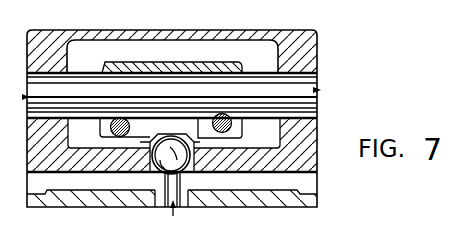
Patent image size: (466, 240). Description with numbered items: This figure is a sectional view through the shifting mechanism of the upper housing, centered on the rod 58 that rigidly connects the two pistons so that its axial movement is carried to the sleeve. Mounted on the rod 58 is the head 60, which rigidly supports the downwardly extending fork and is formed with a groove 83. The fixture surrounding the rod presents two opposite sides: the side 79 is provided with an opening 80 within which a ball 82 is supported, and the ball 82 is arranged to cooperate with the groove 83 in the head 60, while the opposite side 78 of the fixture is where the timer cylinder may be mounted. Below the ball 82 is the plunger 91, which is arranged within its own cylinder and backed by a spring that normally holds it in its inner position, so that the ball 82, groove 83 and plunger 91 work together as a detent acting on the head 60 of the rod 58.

The rod 58 is at (297, 84).
The head 60 is at (113, 68).
The side 78 is at (220, 33).
The side 79 is at (91, 171).
The opening 80 is at (163, 178).
The ball 82 is at (185, 176).
The groove 83 is at (150, 137).
The plunger 91 is at (128, 196).